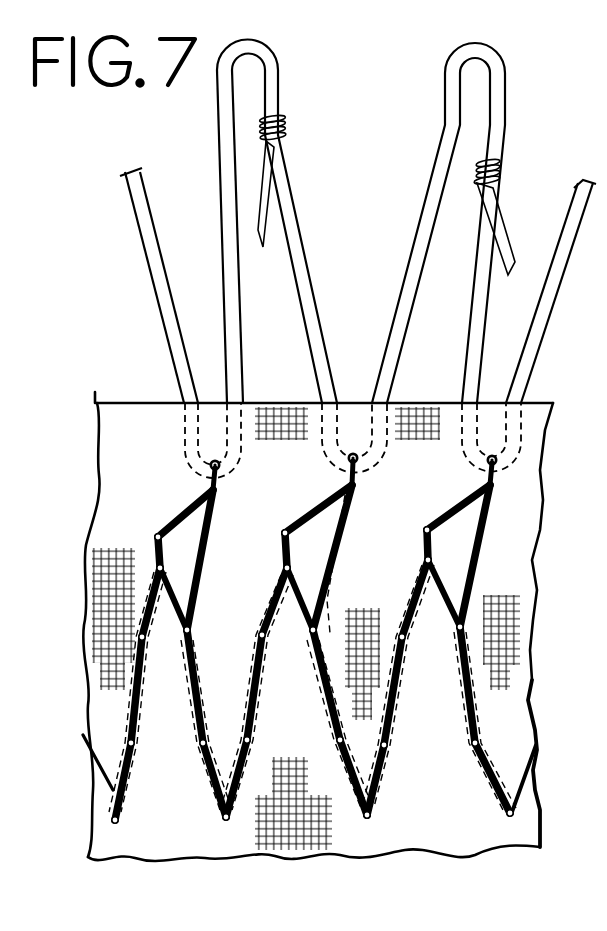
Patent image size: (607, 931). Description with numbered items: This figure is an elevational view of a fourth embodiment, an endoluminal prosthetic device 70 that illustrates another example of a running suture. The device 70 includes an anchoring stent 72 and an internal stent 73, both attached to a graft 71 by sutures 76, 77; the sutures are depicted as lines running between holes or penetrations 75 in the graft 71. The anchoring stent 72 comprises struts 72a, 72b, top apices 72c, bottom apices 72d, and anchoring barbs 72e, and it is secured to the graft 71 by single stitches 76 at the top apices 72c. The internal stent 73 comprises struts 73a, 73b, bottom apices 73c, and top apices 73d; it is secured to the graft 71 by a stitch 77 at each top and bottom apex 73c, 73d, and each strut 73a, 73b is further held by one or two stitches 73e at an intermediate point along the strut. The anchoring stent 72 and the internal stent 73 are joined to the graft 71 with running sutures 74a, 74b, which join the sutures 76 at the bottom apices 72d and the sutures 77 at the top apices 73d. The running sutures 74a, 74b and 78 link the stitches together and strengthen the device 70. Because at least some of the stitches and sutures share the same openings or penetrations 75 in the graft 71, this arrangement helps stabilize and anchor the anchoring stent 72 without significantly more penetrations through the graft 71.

The endoluminal prosthetic device 70 is at (567, 112).
The graft 71 is at (416, 402).
The anchoring stent 72 is at (355, 263).
The strut 72a is at (290, 166).
The strut 72b is at (216, 168).
The top apices 72c is at (279, 62).
The bottom apices 72d is at (190, 447).
The anchoring barbs 72e is at (513, 243).
The internal stent 73 is at (312, 688).
The strut 73a is at (397, 683).
The strut 73b is at (315, 682).
The bottom apices 73c is at (210, 810).
The top apices 73d is at (262, 590).
The stitches 73e is at (190, 621).
The running suture 74a is at (209, 526).
The running suture 74b is at (183, 514).
The holes or penetrations 75 is at (492, 452).
The single stitches 76 is at (353, 452).
The stitches 77 is at (153, 563).
The running suture 78 is at (258, 688).